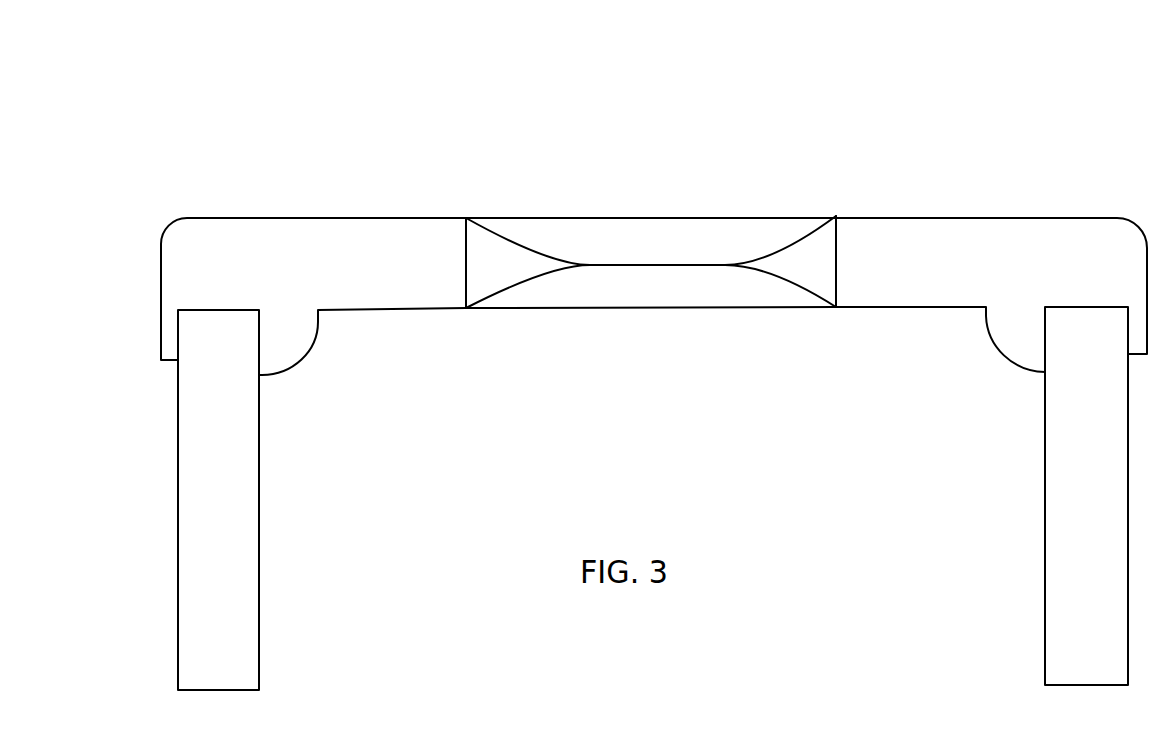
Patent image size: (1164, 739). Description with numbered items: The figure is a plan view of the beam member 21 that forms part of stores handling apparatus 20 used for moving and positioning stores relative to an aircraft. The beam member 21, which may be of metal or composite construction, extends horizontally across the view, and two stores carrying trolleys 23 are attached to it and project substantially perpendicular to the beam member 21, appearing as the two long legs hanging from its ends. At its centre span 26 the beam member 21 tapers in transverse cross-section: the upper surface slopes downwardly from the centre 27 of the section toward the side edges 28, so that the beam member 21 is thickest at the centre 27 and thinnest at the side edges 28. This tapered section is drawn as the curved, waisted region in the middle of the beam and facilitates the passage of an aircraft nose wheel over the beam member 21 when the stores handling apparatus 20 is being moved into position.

The stores handling apparatus 20 is at (445, 167).
The beam member 21 is at (366, 268).
The stores carrying trolleys 23 is at (229, 517).
The centre span 26 is at (657, 298).
The centre 27 is at (630, 263).
The side edges 28 is at (689, 217).